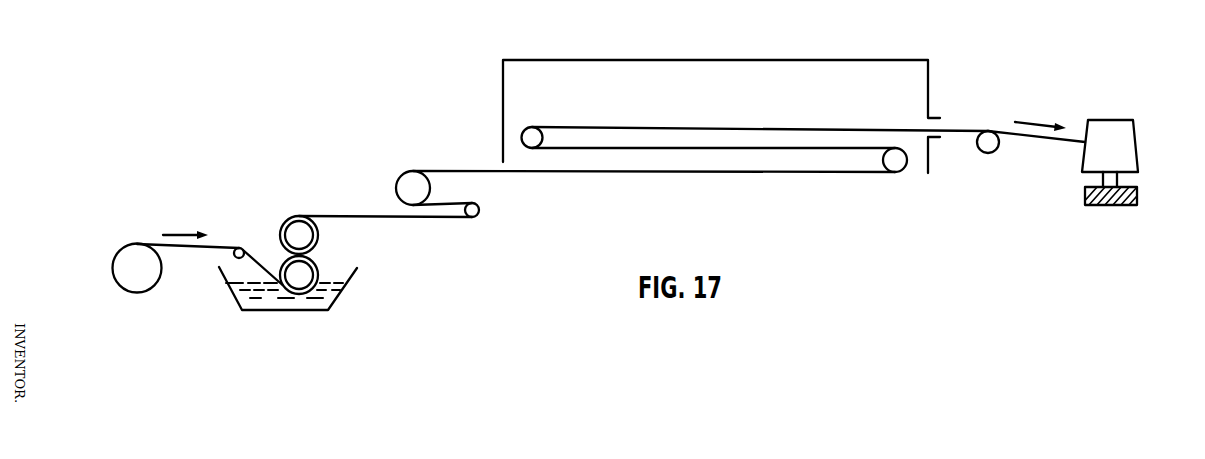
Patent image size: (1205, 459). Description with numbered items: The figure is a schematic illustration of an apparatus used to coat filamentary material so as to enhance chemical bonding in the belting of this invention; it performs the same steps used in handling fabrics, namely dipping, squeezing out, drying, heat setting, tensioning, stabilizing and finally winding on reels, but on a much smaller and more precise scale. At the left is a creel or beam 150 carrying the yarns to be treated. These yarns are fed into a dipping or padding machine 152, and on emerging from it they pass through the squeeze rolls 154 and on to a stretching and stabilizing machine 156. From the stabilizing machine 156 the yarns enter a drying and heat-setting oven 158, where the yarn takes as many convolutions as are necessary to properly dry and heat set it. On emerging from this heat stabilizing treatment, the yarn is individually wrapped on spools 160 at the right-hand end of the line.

The creel or beam 150 is at (137, 290).
The dipping or padding machine 152 is at (345, 288).
The squeeze rolls 154 is at (330, 251).
The stretching and stabilizing machine 156 is at (388, 171).
The drying and heat-setting oven 158 is at (860, 49).
The spools 160 is at (1125, 148).